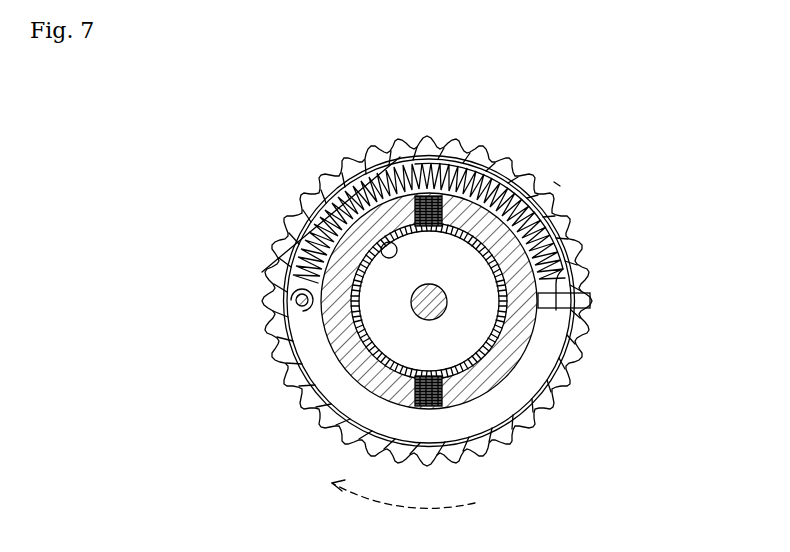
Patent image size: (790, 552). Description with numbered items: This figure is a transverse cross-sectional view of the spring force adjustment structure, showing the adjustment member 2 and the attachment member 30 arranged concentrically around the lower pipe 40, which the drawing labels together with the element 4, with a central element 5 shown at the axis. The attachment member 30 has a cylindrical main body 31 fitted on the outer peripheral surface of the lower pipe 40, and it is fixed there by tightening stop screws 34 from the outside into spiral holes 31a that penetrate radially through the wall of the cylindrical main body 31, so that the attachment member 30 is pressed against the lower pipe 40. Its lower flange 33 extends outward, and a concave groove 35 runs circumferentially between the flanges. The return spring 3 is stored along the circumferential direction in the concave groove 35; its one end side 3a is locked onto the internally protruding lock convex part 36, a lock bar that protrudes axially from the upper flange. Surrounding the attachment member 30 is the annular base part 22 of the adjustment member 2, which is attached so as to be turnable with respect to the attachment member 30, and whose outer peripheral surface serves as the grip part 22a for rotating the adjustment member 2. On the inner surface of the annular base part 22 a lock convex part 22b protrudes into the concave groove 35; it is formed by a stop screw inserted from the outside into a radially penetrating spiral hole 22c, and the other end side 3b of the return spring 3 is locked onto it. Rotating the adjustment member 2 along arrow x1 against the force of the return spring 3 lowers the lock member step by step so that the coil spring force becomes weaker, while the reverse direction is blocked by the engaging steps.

The adjustment member 2 is at (471, 301).
The annular base part 22 is at (567, 208).
The grip part 22a is at (543, 188).
The lock convex part 22b is at (585, 318).
The spiral hole 22c is at (593, 298).
The lower flange 33 is at (555, 338).
The return spring 3 is at (426, 215).
The one end side of the return spring 3a is at (283, 320).
The other end side of the return spring 3b is at (573, 285).
The rotor member 4 is at (473, 256).
The lower pipe 40 is at (384, 243).
The attachment member 30 is at (485, 352).
The cylindrical main body 31 is at (505, 370).
The spiral hole 31a is at (434, 228).
The shaft 5 is at (437, 319).
The stop screw 34 is at (437, 170).
The concave groove 35 is at (520, 388).
The lock convex part 36 is at (292, 298).
The arrow x1 is at (403, 508).